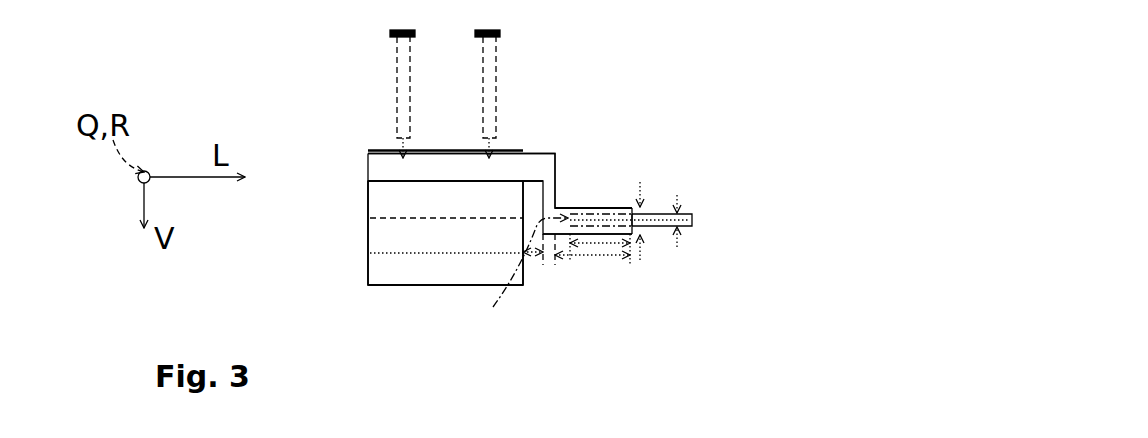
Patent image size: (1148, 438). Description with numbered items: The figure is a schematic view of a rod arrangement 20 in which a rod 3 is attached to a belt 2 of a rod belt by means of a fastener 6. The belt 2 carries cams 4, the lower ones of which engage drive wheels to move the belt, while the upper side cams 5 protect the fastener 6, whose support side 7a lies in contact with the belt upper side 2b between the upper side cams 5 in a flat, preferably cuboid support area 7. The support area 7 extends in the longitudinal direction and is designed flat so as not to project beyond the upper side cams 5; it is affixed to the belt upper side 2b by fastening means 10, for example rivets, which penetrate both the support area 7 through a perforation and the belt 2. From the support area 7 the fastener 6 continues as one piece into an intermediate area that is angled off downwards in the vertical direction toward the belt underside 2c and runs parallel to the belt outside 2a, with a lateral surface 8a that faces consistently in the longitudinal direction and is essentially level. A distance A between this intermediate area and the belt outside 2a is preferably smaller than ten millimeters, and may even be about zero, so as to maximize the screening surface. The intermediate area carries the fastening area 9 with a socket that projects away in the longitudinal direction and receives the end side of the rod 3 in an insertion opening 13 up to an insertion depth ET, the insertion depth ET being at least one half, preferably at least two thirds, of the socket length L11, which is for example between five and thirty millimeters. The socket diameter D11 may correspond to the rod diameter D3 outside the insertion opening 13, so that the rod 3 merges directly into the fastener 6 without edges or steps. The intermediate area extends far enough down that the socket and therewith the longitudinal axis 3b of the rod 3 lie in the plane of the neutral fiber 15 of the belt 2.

The rod arrangement 20 is at (657, 57).
The belt 2 is at (441, 244).
The belt outside 2a is at (527, 207).
The belt upper side 2b is at (377, 178).
The belt underside 2c is at (390, 253).
The cams 4 is at (397, 287).
The upper side cams 5 is at (515, 148).
The fastener 6 is at (555, 150).
The support area 7 is at (384, 167).
The support side 7a is at (395, 182).
The lateral surface 8a is at (557, 183).
The fastening area 9 is at (575, 207).
The fastening means 10 is at (483, 45).
The rod 3 is at (690, 238).
The longitudinal axis 3b is at (653, 216).
The insertion opening 13 is at (512, 271).
The neutral fiber 15 is at (398, 220).
The distance A is at (533, 253).
The socket length L11 is at (568, 250).
The insertion depth ET is at (598, 243).
The socket diameter D11 is at (640, 258).
The rod diameter D3 is at (677, 247).